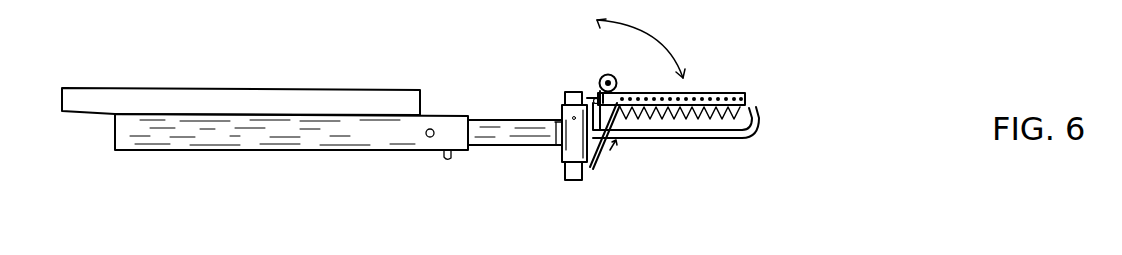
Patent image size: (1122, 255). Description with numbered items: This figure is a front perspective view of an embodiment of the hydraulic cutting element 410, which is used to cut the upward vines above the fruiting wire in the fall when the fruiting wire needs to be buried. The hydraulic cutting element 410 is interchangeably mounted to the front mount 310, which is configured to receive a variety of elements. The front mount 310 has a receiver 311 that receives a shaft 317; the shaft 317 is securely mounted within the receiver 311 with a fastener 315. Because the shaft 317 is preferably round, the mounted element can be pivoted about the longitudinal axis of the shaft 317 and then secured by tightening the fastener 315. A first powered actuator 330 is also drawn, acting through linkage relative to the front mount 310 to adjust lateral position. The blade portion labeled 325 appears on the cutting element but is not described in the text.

The front mount 310 is at (210, 91).
The receiver 311 is at (377, 152).
The fastener 315 is at (430, 137).
The shaft 317 is at (490, 148).
The blade jaw 325 is at (697, 93).
The first powered actuator 330 is at (598, 165).
The hydraulic cutting element 410 is at (788, 43).